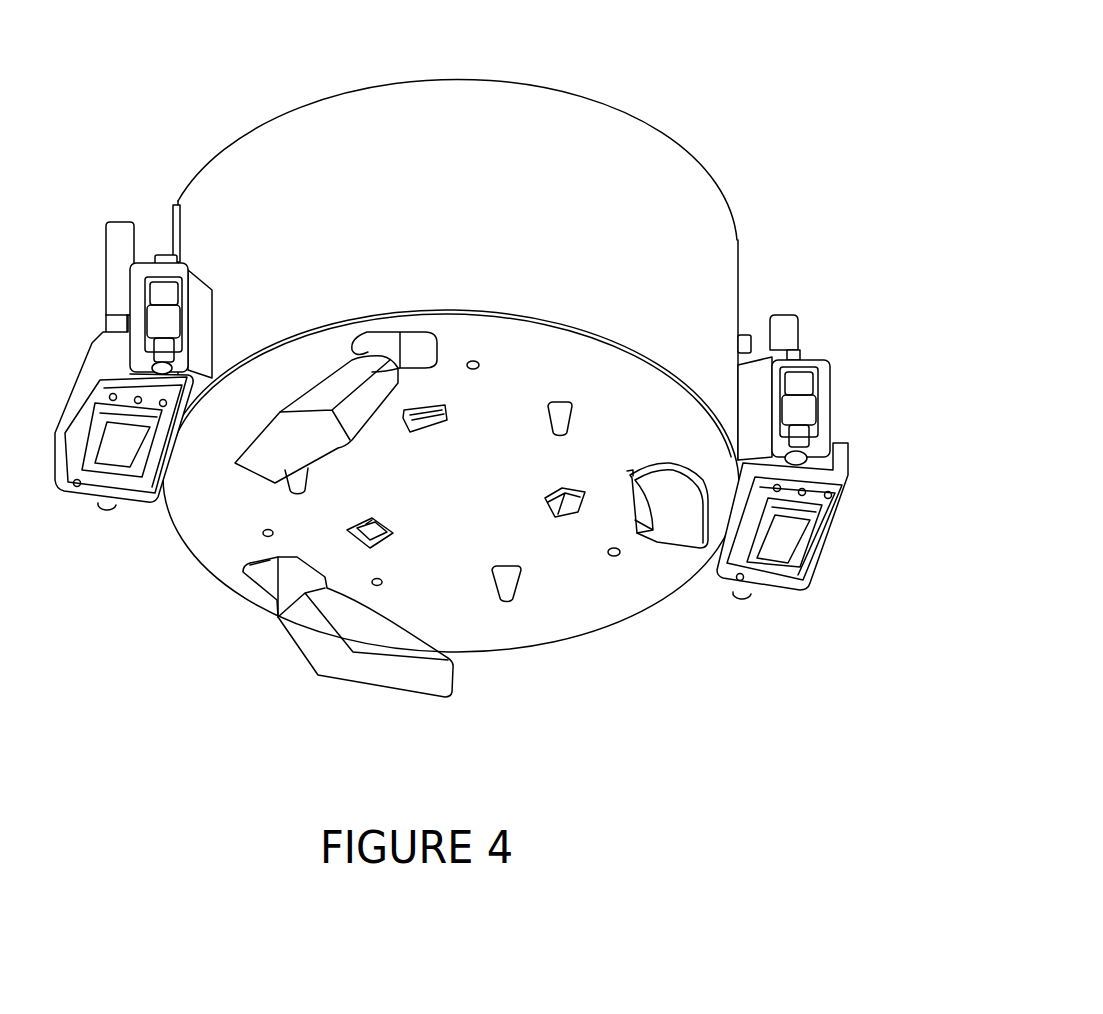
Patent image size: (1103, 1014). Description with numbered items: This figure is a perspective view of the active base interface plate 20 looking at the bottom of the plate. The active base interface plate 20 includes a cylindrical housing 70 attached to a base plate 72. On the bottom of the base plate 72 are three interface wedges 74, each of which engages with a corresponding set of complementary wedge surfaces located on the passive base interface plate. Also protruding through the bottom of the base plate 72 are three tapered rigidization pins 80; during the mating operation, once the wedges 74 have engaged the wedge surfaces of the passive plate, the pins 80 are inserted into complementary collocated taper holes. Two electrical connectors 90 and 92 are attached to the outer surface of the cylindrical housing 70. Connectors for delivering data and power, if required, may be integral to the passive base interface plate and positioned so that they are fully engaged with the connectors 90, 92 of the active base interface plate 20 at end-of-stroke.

The active base interface plate 20 is at (660, 90).
The cylindrical housing 70 is at (703, 270).
The base plate 72 is at (566, 640).
The interface wedges 74 is at (312, 427).
The tapered rigidization pins 80 is at (303, 486).
The electrical connector 90 is at (820, 530).
The electrical connector 92 is at (93, 420).